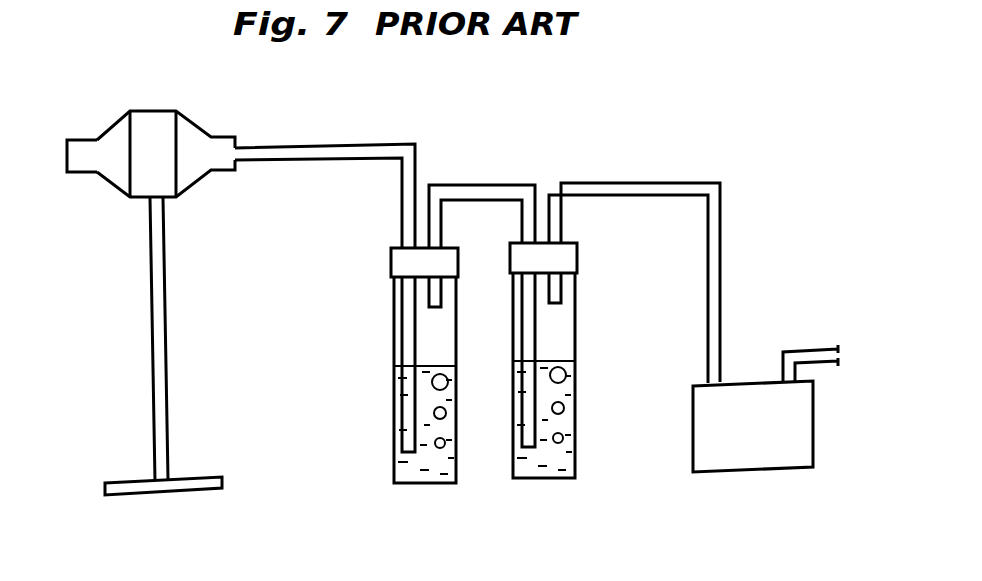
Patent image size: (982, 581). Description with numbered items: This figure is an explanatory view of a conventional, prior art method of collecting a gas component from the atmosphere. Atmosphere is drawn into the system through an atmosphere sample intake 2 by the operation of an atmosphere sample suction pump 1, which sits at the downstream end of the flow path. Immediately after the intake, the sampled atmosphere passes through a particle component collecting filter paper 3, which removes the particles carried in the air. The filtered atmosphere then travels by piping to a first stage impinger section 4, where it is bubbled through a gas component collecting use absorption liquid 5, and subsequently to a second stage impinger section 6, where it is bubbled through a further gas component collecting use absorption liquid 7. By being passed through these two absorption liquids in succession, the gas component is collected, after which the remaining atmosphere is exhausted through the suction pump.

The atmosphere sample suction pump 1 is at (738, 472).
The atmosphere sample intake 2 is at (83, 145).
The particle component collecting filter paper 3 is at (158, 110).
The first stage impinger section 4 is at (393, 333).
The gas component collecting use absorption liquid 5 is at (393, 415).
The second stage impinger section 6 is at (576, 316).
The gas component collecting use absorption liquid 7 is at (578, 402).